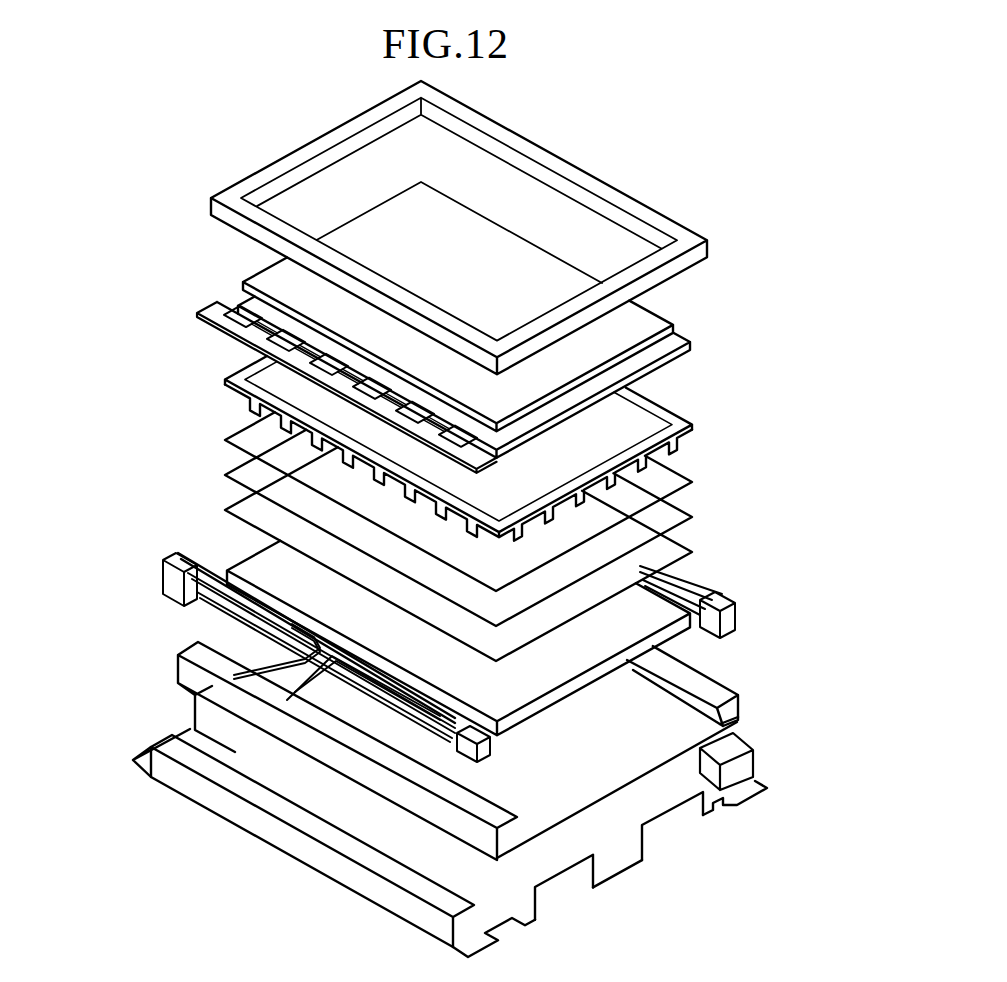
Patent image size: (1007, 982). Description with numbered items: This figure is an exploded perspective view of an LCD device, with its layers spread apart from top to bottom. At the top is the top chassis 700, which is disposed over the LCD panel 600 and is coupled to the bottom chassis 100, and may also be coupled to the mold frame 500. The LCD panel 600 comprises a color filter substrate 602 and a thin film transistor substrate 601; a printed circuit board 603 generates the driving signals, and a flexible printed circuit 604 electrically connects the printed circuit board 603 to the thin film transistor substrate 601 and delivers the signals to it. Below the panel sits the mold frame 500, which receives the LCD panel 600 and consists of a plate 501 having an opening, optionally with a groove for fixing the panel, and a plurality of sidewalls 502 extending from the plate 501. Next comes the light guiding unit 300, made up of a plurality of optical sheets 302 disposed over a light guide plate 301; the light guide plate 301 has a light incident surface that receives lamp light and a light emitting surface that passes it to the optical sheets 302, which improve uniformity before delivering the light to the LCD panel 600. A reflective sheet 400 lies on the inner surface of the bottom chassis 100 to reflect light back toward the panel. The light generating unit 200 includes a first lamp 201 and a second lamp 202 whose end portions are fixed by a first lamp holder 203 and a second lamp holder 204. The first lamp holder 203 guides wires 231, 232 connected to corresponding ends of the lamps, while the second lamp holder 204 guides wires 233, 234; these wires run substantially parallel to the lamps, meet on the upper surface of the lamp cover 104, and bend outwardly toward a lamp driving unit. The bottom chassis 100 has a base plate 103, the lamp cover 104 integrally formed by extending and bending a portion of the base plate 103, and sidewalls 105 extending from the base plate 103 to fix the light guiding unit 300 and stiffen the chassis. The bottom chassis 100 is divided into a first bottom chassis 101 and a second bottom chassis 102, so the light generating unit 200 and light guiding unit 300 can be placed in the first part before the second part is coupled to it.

The top chassis 700 is at (683, 239).
The LCD panel 600 is at (508, 365).
The color filter substrate 602 is at (652, 322).
The thin film transistor substrate 601 is at (678, 338).
The flexible printed circuit 604 is at (483, 413).
The printed circuit board 603 is at (607, 393).
The mold frame 500 is at (522, 448).
The plate 501 is at (688, 428).
The sidewalls 502 is at (683, 438).
The light guiding unit 300 is at (522, 573).
The optical sheets 302 is at (670, 548).
The light guide plate 301 is at (660, 603).
The reflective sheet 400 is at (724, 723).
The light generating unit 200 is at (384, 652).
The first lamp 201 is at (197, 597).
The second lamp 202 is at (205, 600).
The first lamp holder 203 is at (170, 590).
The second lamp holder 204 is at (457, 752).
The wire 231 is at (232, 674).
The wire 232 is at (240, 682).
The wire 233 is at (287, 700).
The wire 234 is at (300, 688).
The bottom chassis 100 is at (499, 799).
The first bottom chassis 101 is at (690, 848).
The second bottom chassis 102 is at (612, 880).
The base plate 103 is at (717, 787).
The lamp cover 104 is at (440, 932).
The sidewalls 105 is at (688, 818).